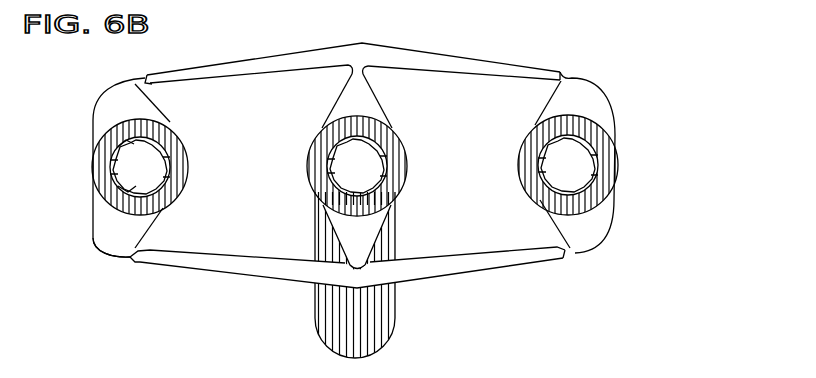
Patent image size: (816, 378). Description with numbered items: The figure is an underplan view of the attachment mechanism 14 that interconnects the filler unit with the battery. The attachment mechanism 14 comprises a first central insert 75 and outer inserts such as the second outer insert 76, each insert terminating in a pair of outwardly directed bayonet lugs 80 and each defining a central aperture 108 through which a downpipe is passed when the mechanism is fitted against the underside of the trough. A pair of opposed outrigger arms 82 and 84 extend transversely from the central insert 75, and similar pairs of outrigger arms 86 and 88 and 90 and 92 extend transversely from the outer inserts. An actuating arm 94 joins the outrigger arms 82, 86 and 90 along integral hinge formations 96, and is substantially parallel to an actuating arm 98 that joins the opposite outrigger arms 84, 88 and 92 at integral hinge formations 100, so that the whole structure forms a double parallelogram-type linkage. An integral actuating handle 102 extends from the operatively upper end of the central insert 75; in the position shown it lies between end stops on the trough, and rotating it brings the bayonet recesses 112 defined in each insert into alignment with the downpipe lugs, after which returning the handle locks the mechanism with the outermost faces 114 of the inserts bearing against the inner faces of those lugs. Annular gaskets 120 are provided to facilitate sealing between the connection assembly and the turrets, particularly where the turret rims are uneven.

The attachment mechanism 14 is at (628, 117).
The first central insert 75 is at (380, 146).
The second outer insert 76 is at (172, 167).
The outwardly directed bayonet lugs 80 is at (110, 198).
The outrigger arm 82 is at (354, 103).
The outrigger arm 84 is at (366, 226).
The outrigger arm 86 is at (153, 108).
The outrigger arm 88 is at (153, 220).
The outrigger arm 90 is at (590, 93).
The outrigger arm 92 is at (592, 237).
The actuating arm 94 is at (270, 56).
The integral hinge formations 96 is at (148, 78).
The actuating arm 98 is at (258, 268).
The integral hinge formations 100 is at (143, 264).
The actuating handle 102 is at (328, 328).
The central apertures 108 is at (115, 159).
The bayonet recesses 112 is at (112, 123).
The outermost faces 114 is at (386, 166).
The annular gaskets 120 is at (120, 217).